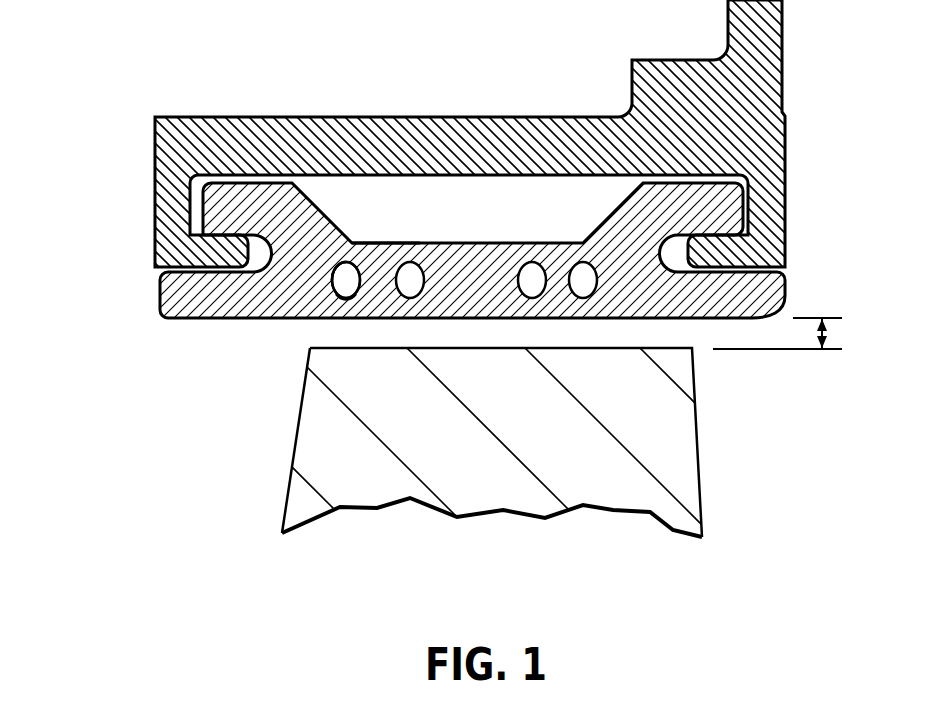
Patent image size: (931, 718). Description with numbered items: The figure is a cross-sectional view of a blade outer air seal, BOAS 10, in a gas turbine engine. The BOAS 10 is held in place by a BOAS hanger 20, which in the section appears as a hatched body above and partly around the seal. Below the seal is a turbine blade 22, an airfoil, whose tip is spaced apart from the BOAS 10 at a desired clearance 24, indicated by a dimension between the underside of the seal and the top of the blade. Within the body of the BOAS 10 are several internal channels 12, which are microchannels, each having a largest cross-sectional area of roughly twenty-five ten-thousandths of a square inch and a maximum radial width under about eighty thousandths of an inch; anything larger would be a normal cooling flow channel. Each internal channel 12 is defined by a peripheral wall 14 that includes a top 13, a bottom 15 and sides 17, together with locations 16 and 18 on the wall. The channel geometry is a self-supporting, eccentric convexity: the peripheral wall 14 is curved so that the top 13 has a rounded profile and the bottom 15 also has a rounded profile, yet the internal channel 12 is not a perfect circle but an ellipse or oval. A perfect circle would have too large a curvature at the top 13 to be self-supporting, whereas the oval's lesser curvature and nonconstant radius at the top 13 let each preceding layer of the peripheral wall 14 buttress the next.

The BOAS 10 is at (148, 300).
The internal channels 12 is at (438, 281).
The top 13 is at (355, 243).
The peripheral walls 14 is at (352, 299).
The bottom 15 is at (343, 299).
The location 16 is at (338, 262).
The sides 17 is at (318, 305).
The location 18 is at (334, 264).
The BOAS hanger 20 is at (146, 174).
The turbine blade 22 is at (266, 493).
The clearance 24 is at (826, 332).